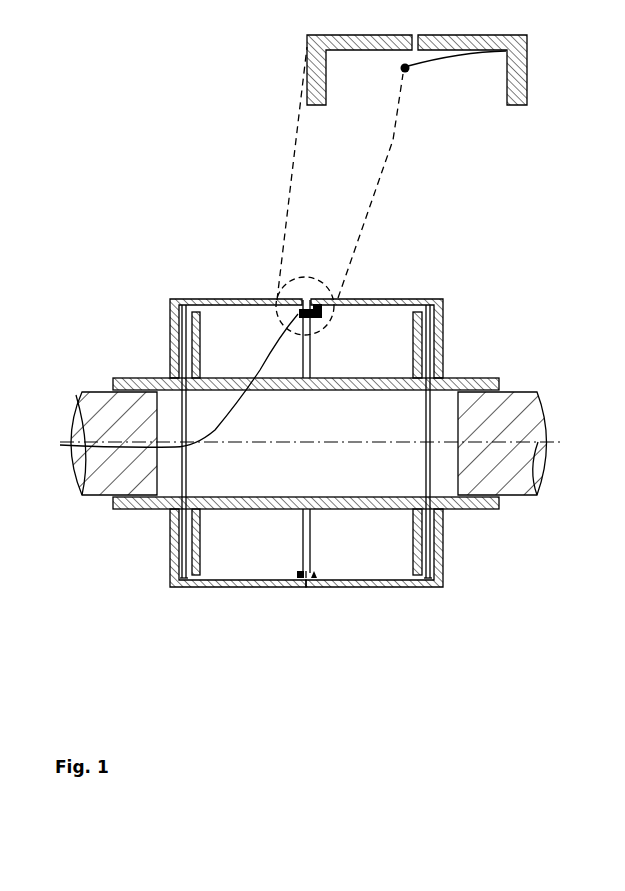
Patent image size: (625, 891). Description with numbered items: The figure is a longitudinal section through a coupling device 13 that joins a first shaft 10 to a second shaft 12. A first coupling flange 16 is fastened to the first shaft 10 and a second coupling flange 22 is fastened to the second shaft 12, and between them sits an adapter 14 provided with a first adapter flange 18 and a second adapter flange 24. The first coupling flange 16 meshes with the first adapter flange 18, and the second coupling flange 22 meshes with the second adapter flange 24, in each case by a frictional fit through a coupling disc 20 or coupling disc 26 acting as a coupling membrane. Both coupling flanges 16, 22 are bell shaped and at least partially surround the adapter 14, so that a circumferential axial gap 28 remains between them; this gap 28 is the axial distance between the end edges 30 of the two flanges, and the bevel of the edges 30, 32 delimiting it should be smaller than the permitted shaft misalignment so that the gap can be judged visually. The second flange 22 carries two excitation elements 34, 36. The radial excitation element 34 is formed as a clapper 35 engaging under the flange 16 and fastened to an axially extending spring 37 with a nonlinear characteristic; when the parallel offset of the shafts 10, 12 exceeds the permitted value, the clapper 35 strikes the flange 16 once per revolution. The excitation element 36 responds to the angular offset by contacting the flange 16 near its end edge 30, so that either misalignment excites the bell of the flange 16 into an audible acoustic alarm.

The first shaft 10 is at (73, 497).
The second shaft 12 is at (544, 497).
The coupling device 13 is at (145, 285).
The adapter 14 is at (402, 322).
The first coupling flange 16 is at (172, 320).
The first adapter flange 18 is at (197, 363).
The coupling disc 20 is at (183, 347).
The second coupling flange 22 is at (440, 335).
The second adapter flange 24 is at (417, 330).
The coupling disc 26 is at (429, 374).
The circumferential axial gap 28 is at (313, 345).
The end edge 30 is at (301, 306).
The edge 32 is at (312, 304).
The excitation element 34 is at (258, 357).
The clapper 35 is at (404, 73).
The excitation element 36 is at (315, 572).
The spring 37 is at (430, 58).